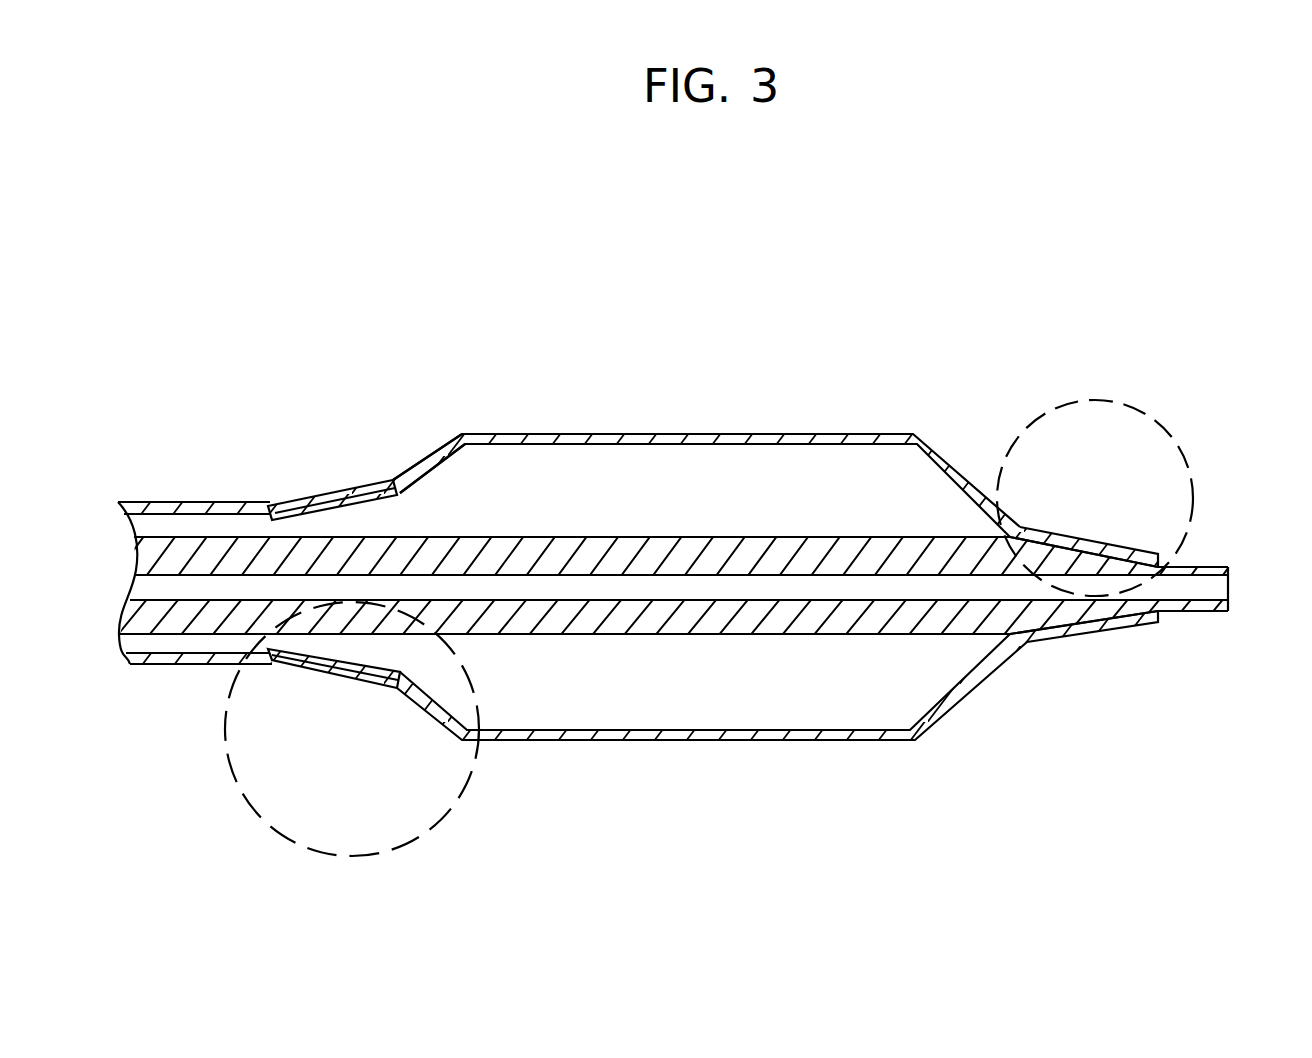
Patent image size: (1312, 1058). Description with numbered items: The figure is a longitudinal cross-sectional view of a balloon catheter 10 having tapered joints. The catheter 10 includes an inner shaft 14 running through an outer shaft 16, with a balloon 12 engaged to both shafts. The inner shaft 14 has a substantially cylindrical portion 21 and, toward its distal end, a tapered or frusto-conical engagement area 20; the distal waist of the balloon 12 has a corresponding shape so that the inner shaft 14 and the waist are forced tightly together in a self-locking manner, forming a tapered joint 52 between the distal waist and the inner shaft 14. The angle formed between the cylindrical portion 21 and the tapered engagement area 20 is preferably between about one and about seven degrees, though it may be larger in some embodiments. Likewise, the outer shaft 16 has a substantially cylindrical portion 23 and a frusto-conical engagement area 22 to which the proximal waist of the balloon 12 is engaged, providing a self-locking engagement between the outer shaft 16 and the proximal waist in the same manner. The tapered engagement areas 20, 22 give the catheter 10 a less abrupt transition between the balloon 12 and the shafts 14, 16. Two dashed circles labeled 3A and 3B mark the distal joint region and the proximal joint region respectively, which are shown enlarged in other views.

The catheter 10 is at (767, 335).
The balloon 12 is at (787, 434).
The inner shaft 14 is at (893, 637).
The outer shaft 16 is at (235, 462).
The tapered engagement area 20 is at (1102, 635).
The substantially cylindrical portion 21 is at (1028, 610).
The tapered engagement area 22 is at (327, 487).
The substantially cylindrical portion 23 is at (422, 460).
The tapered joint 52 is at (1102, 545).
The detail circle for FIG. 3A is at (1125, 403).
The detail circle for FIG. 3B is at (395, 850).